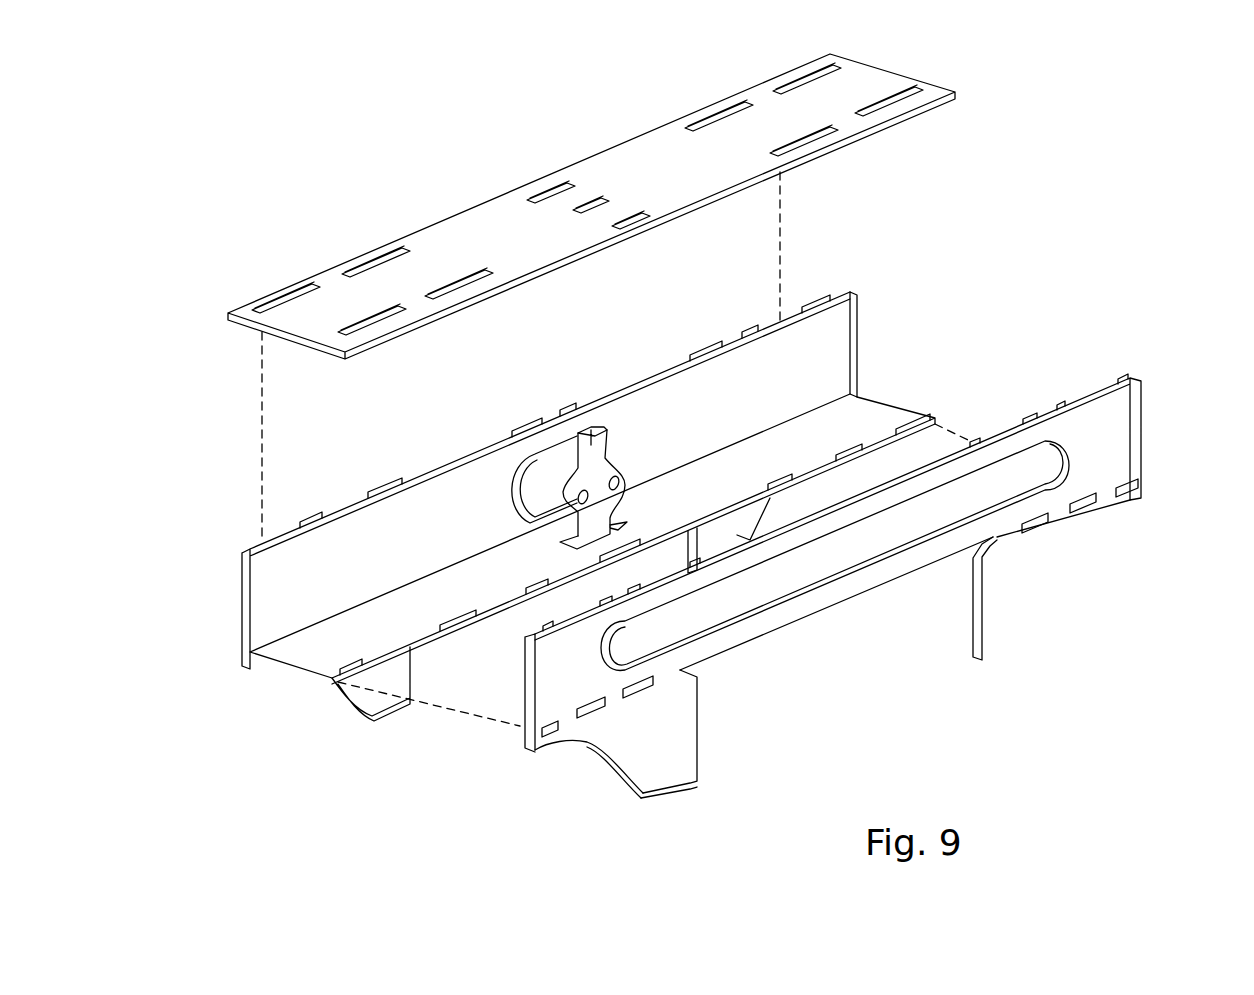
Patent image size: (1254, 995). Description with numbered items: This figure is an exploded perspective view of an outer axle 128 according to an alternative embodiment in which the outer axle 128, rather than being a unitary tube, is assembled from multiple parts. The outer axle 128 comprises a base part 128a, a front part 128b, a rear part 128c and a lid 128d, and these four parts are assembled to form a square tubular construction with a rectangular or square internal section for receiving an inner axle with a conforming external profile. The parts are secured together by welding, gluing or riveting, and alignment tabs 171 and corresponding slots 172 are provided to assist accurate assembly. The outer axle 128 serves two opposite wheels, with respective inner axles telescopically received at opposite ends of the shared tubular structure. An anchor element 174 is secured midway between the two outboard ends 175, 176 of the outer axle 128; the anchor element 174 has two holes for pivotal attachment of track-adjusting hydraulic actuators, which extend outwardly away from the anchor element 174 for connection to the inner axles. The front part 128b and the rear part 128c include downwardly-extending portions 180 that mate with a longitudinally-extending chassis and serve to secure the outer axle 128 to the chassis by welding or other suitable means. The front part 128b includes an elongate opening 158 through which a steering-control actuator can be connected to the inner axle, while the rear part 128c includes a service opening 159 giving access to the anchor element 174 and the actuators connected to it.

The outer axle 128 is at (226, 458).
The base part 128a is at (288, 668).
The front part 128b is at (594, 747).
The rear part 128c is at (244, 588).
The lid 128d is at (940, 86).
The elongate opening 158 is at (865, 565).
The service opening 159 is at (523, 458).
The alignment tabs 171 is at (347, 522).
The slots 172 is at (367, 258).
The anchor element 174 is at (593, 432).
The outboard end 175 is at (262, 624).
The outboard end 176 is at (860, 330).
The downwardly-extending portions 180 is at (703, 722).